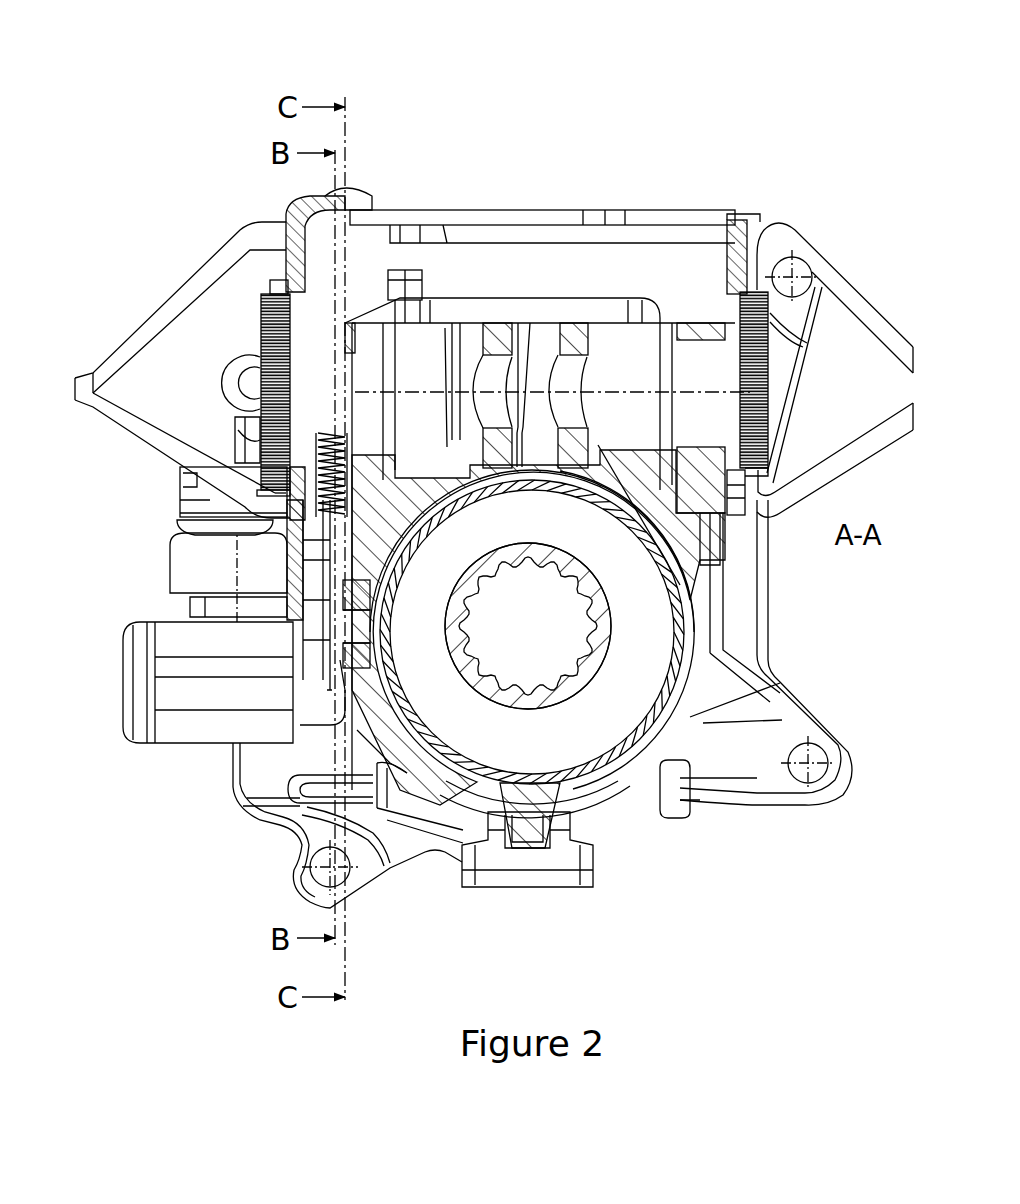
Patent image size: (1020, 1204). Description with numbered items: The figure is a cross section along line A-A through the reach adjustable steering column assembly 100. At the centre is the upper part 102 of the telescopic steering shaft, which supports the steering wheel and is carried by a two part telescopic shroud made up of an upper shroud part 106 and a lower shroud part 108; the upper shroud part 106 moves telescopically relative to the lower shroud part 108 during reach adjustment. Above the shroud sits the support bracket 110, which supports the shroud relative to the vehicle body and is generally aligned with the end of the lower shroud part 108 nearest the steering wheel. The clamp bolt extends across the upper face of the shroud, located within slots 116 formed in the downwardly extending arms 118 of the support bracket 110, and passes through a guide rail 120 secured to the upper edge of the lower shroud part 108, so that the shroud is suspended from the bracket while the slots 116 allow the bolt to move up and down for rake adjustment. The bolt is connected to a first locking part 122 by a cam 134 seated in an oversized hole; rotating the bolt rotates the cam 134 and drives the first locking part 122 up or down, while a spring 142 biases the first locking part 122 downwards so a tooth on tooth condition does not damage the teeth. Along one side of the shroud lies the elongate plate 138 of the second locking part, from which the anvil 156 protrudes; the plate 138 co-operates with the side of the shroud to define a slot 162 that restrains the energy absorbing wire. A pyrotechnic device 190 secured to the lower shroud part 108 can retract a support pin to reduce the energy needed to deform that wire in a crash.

The steering column assembly 100 is at (467, 135).
The upper part 102 is at (569, 706).
The upper shroud part 106 is at (690, 668).
The lower shroud part 108 is at (715, 560).
The support bracket 110 is at (606, 207).
The slots 116 is at (288, 292).
The arms 118 is at (288, 210).
The guide rail 120 is at (522, 348).
The first locking part 122 is at (306, 416).
The cam 134 is at (322, 357).
The elongate plate 138 is at (322, 598).
The spring 142 is at (312, 484).
The anvil 156 is at (352, 626).
The slot 162 is at (344, 676).
The pyrotechnic device 190 is at (170, 745).